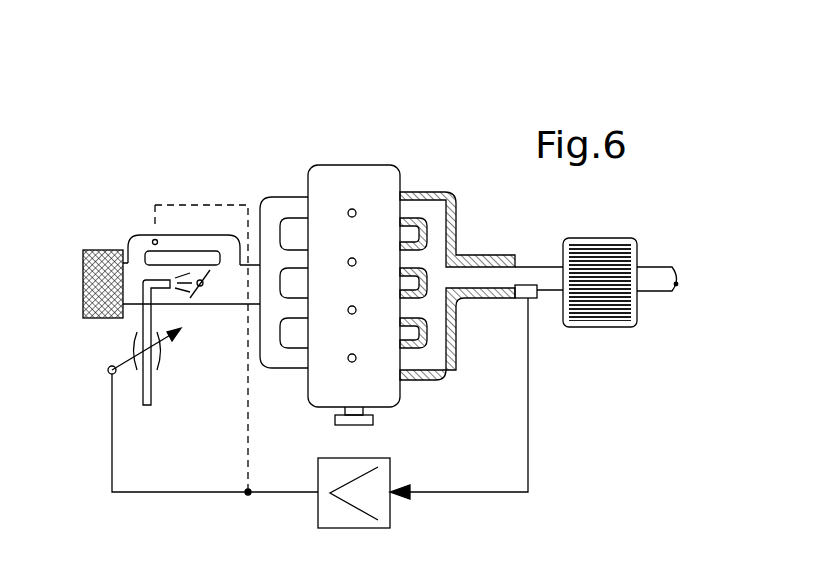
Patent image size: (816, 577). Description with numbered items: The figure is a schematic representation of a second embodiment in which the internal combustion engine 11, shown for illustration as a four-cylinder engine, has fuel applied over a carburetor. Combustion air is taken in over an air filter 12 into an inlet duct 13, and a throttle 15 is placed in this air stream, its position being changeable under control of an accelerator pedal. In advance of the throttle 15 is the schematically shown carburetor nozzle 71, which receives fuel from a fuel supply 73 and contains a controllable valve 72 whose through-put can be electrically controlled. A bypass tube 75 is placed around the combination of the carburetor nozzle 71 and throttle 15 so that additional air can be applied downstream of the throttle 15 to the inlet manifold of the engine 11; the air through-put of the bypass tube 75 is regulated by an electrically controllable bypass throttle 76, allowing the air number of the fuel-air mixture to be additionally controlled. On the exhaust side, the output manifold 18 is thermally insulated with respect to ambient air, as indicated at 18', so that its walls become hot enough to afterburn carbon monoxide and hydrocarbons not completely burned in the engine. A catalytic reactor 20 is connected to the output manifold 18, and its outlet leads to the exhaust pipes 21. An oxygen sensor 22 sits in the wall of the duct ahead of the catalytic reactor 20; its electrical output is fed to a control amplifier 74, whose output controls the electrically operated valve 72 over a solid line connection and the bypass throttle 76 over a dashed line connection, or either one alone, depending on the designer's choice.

The internal combustion engine 11 is at (386, 177).
The air filter 12 is at (95, 262).
The inlet duct 13 is at (137, 300).
The throttle 15 is at (199, 287).
The output manifold 18 is at (457, 285).
The thermal insulation 18' is at (521, 248).
The catalytic reactor 20 is at (600, 260).
The exhaust pipes 21 is at (652, 278).
The oxygen sensor 22 is at (535, 299).
The carburetor nozzle 71 is at (157, 291).
The controllable valve 72 is at (158, 355).
The fuel supply 73 is at (146, 395).
The control amplifier 74 is at (355, 528).
The bypass tube 75 is at (138, 248).
The bypass throttle 76 is at (163, 246).